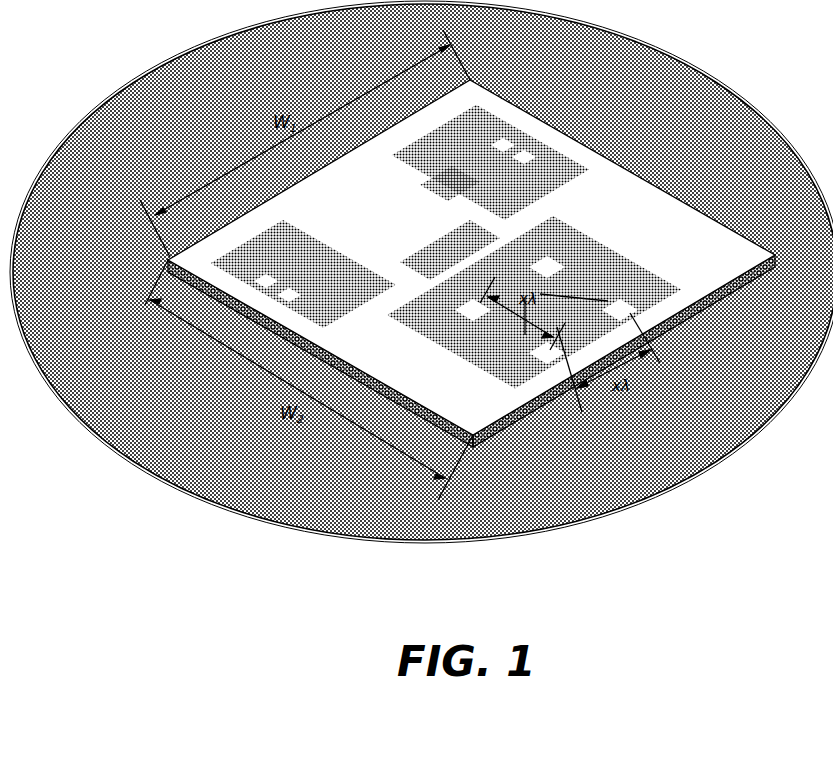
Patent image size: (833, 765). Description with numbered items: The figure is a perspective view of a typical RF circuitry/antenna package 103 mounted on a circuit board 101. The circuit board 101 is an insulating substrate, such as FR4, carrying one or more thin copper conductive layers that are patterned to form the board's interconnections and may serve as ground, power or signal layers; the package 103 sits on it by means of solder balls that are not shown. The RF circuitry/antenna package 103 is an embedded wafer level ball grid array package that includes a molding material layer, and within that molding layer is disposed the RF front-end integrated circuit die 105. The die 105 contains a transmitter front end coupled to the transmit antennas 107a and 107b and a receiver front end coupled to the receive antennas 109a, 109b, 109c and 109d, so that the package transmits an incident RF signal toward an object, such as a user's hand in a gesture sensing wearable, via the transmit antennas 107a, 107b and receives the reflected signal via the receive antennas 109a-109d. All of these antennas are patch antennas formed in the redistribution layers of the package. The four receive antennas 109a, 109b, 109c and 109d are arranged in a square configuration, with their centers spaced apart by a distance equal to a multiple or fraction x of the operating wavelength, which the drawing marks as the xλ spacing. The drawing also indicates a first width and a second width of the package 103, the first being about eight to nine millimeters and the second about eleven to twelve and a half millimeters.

The circuit board 101 is at (168, 78).
The RF circuitry/antenna package 103 is at (663, 191).
The RF front-end integrated circuit die 105 is at (416, 227).
The transmit antenna 107a is at (290, 302).
The transmit antenna 107b is at (532, 155).
The receive antenna 109a is at (462, 309).
The receive antenna 109b is at (557, 263).
The receive antenna 109c is at (550, 362).
The receive antenna 109d is at (620, 301).